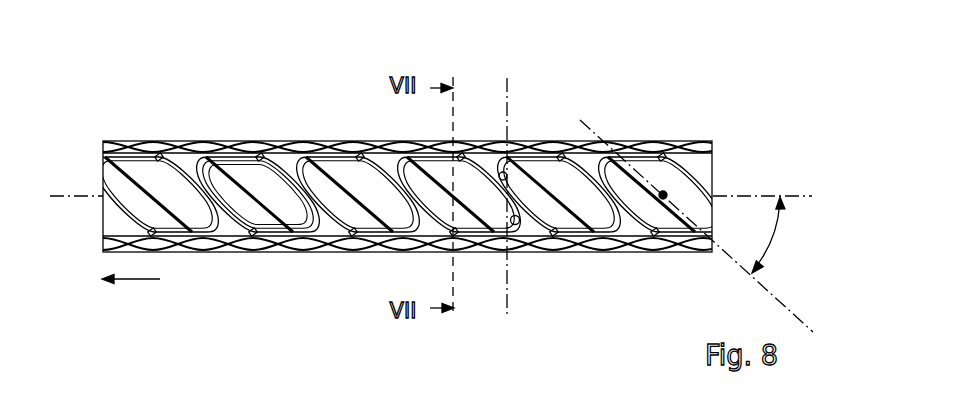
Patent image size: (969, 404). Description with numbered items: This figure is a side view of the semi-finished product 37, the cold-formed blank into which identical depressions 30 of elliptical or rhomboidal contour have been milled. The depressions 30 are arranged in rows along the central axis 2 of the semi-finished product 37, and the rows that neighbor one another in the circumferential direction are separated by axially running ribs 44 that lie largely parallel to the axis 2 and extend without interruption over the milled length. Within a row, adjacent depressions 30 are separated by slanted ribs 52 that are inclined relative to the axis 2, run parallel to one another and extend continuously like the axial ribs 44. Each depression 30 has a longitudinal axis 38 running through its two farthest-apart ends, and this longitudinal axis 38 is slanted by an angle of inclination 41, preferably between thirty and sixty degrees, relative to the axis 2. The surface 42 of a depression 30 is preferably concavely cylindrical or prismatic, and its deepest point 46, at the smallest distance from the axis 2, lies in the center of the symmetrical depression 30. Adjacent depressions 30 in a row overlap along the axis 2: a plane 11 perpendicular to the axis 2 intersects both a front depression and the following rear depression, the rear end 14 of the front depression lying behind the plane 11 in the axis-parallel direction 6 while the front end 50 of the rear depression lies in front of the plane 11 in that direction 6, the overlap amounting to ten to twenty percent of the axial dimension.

The semi-finished product 37 is at (140, 66).
The depression 30 is at (250, 168).
The plane 11 is at (509, 128).
The axis 2 is at (71, 198).
The axis-parallel direction 6 is at (141, 279).
The axially running rib 44 is at (182, 238).
The slanted rib 52 is at (224, 227).
The surface 42 is at (316, 247).
The front end 50 is at (502, 180).
The rear end 14 is at (519, 224).
The deepest point 46 is at (661, 199).
The longitudinal axis 38 is at (727, 257).
The angle of inclination 41 is at (772, 240).